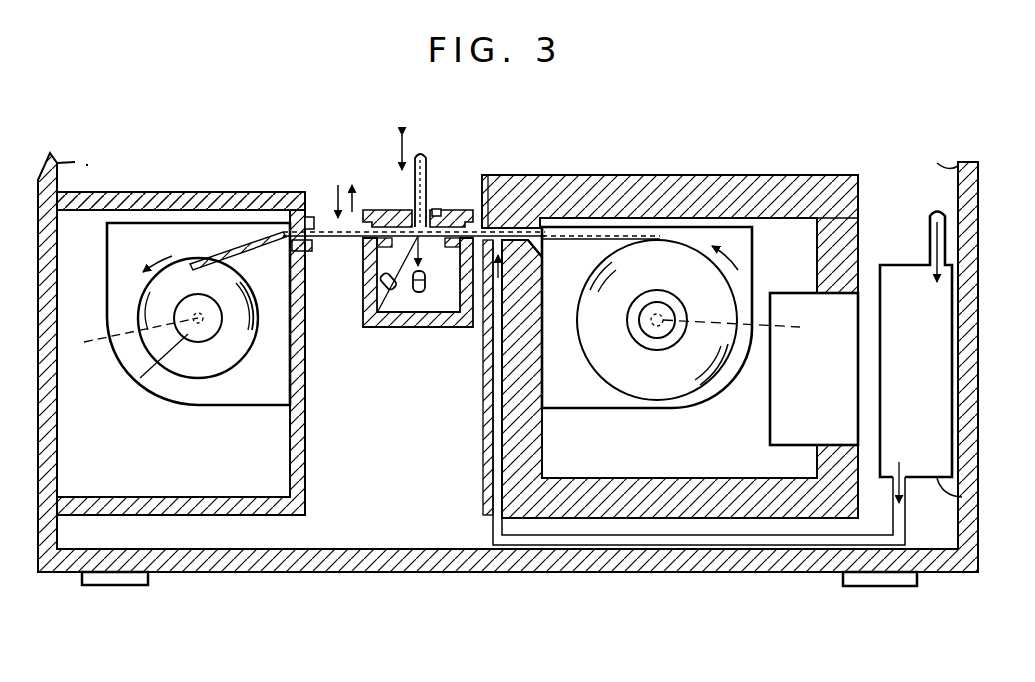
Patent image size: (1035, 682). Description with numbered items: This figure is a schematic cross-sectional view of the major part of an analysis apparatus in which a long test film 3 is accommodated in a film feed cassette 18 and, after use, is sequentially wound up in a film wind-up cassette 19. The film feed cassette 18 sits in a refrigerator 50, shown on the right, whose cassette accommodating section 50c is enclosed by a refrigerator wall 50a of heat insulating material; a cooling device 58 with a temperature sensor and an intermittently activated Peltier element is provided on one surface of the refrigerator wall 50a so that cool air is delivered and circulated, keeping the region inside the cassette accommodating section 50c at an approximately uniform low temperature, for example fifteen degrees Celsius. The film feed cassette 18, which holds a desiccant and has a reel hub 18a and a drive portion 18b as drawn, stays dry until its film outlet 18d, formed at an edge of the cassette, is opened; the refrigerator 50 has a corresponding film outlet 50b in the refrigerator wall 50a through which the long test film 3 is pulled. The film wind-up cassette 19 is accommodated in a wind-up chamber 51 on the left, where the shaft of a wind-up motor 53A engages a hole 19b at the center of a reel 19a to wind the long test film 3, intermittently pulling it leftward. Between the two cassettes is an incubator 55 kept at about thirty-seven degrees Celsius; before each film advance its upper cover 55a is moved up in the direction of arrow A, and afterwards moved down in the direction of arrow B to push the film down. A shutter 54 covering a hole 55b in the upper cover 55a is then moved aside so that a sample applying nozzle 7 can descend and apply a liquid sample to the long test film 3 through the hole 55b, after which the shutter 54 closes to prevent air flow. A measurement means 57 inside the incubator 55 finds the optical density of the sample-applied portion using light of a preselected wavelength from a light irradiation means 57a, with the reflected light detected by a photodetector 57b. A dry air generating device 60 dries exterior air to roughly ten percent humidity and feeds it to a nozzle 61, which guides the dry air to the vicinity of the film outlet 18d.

The long test film 3 is at (570, 240).
The sample applying nozzle 7 is at (412, 163).
The film feed cassette 18 is at (600, 410).
The cassette reel hub 18a is at (627, 322).
The cassette drive block 18b is at (760, 369).
The film outlet 18d is at (537, 242).
The film wind-up cassette 19 is at (107, 258).
The reel 19a is at (174, 376).
The hole 19b is at (141, 331).
The refrigerator 50 is at (670, 371).
The refrigerator wall 50a is at (522, 498).
The film outlet 50b is at (490, 178).
The cassette accommodating section 50c is at (786, 240).
The wind-up chamber 51 is at (238, 487).
The wind-up motor 53A is at (140, 378).
The shutter 54 is at (440, 212).
The incubator 55 is at (388, 318).
The upper cover 55a is at (376, 209).
The hole 55b is at (436, 211).
The measurement means 57 is at (396, 297).
The light irradiation means 57a is at (381, 288).
The photodetector 57b is at (418, 293).
The cooling device 58 is at (858, 312).
The dry air generating device 60 is at (962, 497).
The nozzle 61 is at (611, 547).
The arrow A is at (346, 195).
The arrow B is at (336, 203).